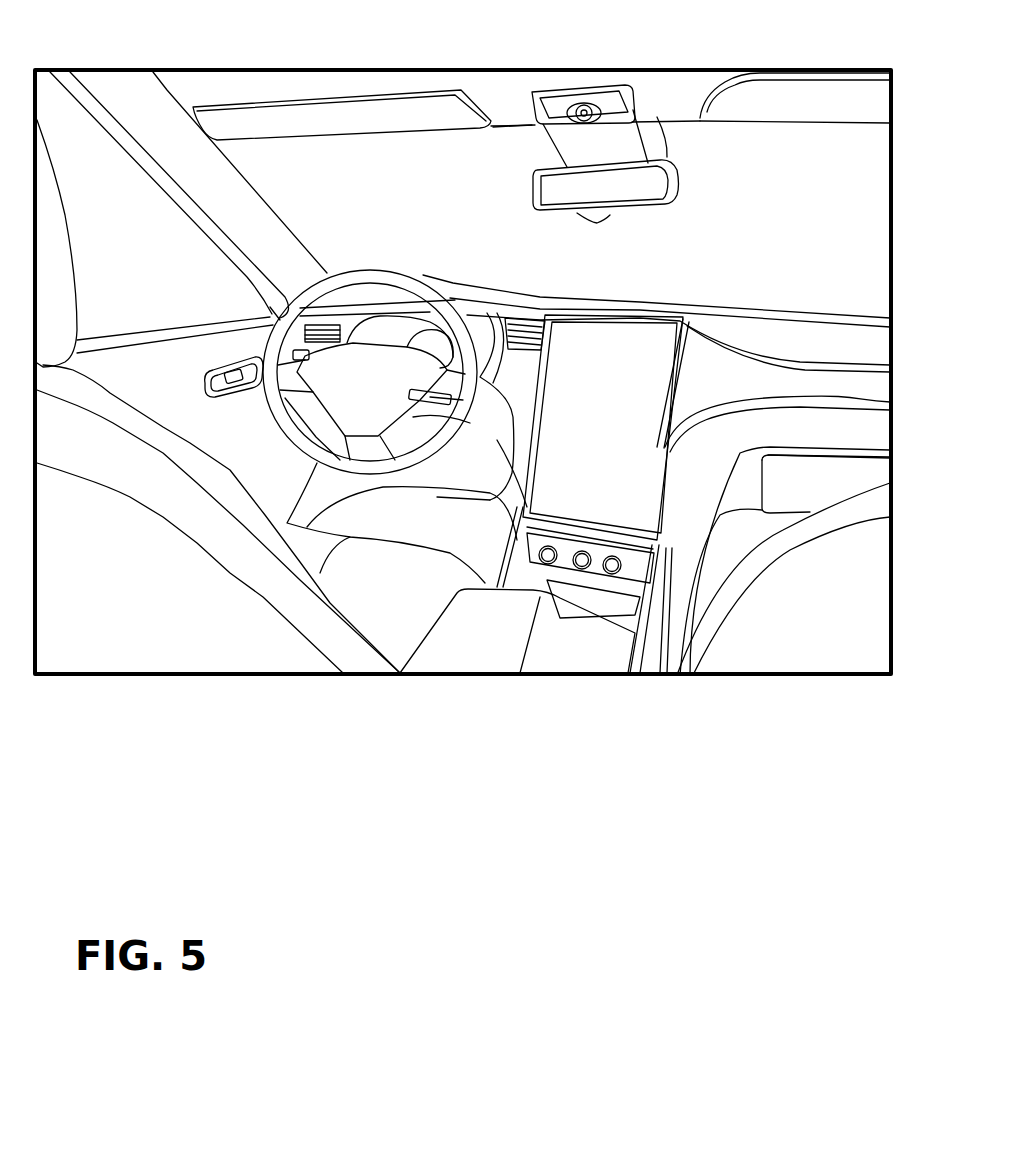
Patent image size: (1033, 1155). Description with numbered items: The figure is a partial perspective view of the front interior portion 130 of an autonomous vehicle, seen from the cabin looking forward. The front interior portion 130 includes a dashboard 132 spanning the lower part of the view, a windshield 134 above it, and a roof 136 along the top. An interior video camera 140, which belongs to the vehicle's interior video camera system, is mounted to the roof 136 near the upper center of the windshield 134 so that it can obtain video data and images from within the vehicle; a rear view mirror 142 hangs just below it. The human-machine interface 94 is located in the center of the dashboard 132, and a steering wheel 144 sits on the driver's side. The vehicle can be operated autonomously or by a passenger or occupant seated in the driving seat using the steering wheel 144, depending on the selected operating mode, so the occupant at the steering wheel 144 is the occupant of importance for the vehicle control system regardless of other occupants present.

The human-machine interface 94 is at (566, 394).
The front interior portion 130 is at (681, 690).
The dashboard 132 is at (830, 347).
The windshield 134 is at (826, 172).
The roof 136 is at (514, 101).
The interior video camera 140 is at (583, 103).
The rear view mirror 142 is at (673, 162).
The steering wheel 144 is at (383, 272).